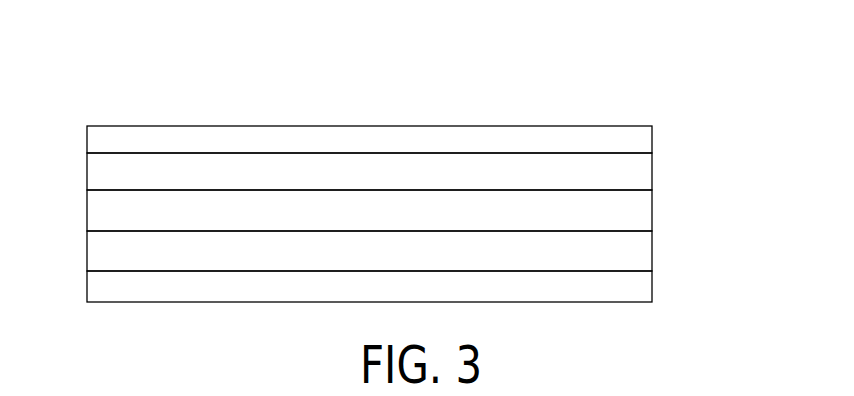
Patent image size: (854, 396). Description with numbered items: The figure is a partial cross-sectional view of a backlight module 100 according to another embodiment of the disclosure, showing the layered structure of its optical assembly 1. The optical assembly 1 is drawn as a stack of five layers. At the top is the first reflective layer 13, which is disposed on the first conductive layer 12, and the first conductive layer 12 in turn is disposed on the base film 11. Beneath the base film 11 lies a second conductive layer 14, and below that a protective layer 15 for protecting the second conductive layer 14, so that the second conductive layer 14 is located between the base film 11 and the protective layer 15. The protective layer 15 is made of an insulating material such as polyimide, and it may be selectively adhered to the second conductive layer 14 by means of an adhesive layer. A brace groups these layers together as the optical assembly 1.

The display device 100 is at (722, 60).
The optical assembly 1 is at (80, 134).
The first reflective layer 13 is at (653, 140).
The first conductive layer 12 is at (653, 174).
The base film 11 is at (653, 206).
The second conductive layer 14 is at (653, 247).
The protective layer 15 is at (653, 286).